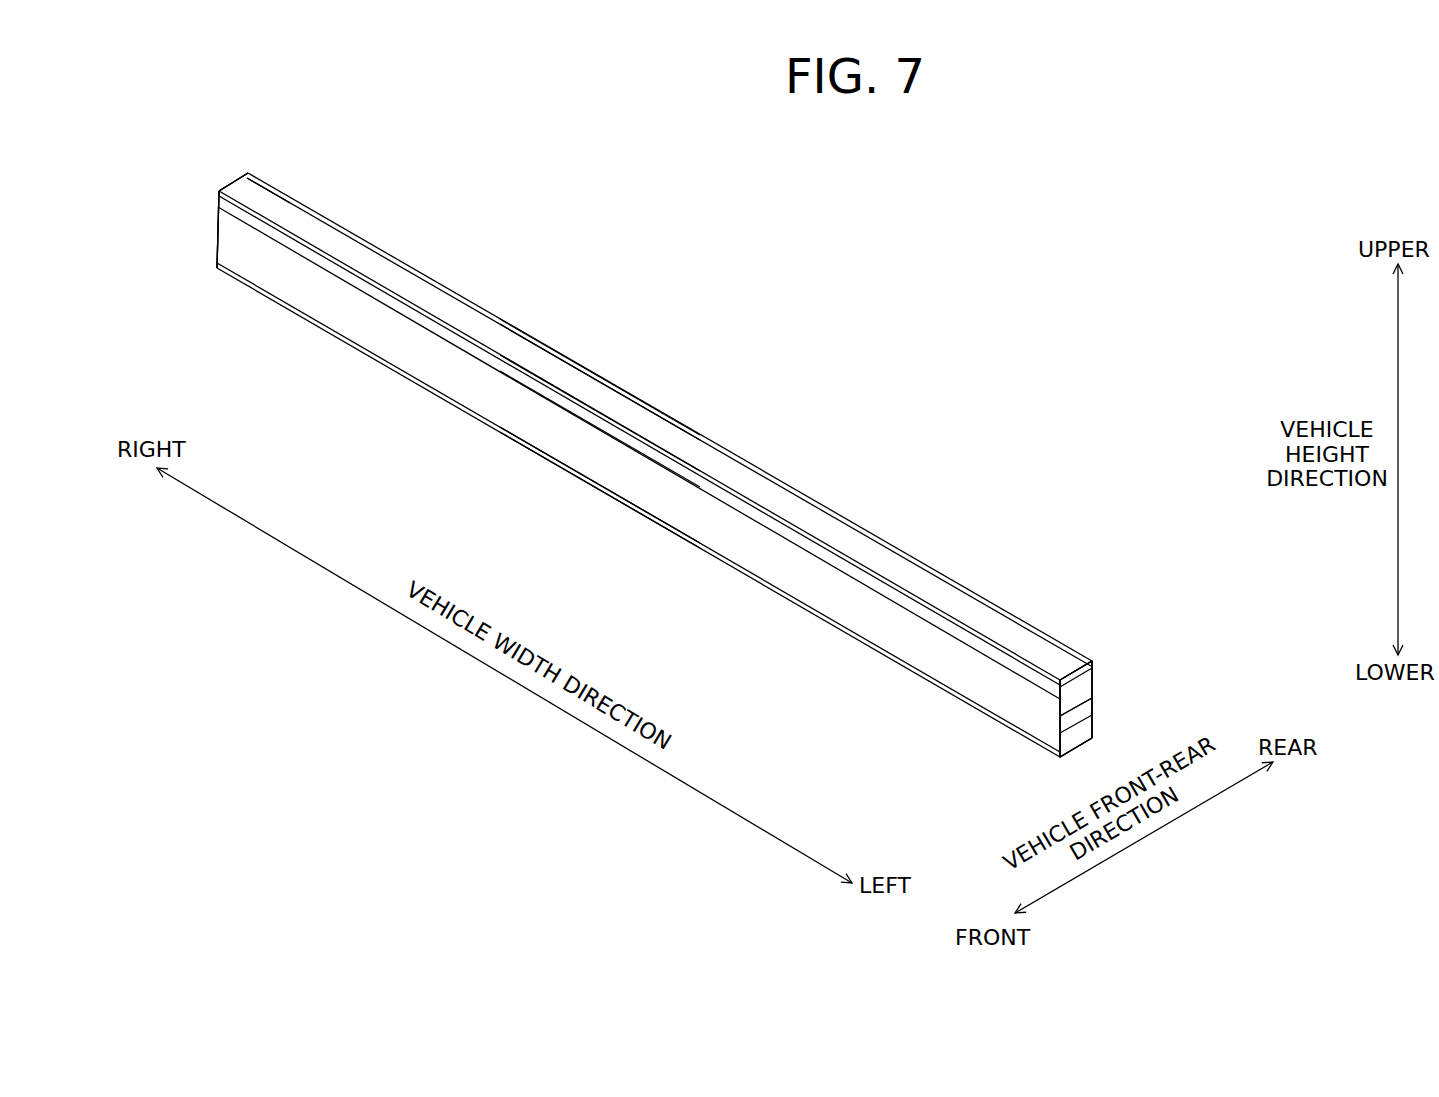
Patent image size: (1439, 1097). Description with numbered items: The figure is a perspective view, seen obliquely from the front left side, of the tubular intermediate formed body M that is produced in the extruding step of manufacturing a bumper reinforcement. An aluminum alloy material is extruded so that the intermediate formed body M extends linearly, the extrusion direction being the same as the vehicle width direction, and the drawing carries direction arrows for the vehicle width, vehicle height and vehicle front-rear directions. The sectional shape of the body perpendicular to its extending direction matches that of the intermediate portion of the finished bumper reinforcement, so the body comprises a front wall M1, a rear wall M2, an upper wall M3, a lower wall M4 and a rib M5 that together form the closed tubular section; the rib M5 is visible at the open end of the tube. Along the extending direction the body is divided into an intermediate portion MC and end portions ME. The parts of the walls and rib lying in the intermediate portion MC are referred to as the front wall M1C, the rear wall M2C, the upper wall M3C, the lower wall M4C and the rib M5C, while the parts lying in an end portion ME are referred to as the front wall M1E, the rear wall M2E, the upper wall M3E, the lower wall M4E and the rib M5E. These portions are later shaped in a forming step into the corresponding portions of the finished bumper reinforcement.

The intermediate formed body M is at (643, 463).
The front wall M1 is at (513, 410).
The rear wall M2 is at (698, 432).
The upper wall M3 is at (568, 380).
The lower wall M4 is at (573, 478).
The rib M5 is at (1073, 718).
The end portion ME is at (373, 156).
The front wall M1E is at (242, 249).
The rear wall M2E is at (303, 202).
The upper wall M3E is at (273, 207).
The lower wall M4E is at (1080, 750).
The rib M5E is at (1092, 702).
The intermediate portion MC is at (460, 517).
The front wall M1C is at (627, 478).
The rear wall M2C is at (645, 400).
The upper wall M3C is at (532, 363).
The lower wall M4C is at (675, 537).
The rib M5C is at (487, 373).